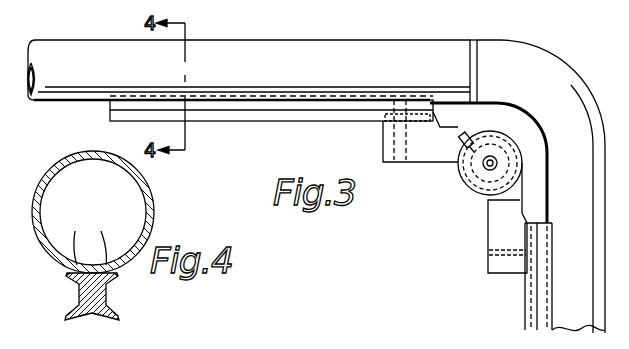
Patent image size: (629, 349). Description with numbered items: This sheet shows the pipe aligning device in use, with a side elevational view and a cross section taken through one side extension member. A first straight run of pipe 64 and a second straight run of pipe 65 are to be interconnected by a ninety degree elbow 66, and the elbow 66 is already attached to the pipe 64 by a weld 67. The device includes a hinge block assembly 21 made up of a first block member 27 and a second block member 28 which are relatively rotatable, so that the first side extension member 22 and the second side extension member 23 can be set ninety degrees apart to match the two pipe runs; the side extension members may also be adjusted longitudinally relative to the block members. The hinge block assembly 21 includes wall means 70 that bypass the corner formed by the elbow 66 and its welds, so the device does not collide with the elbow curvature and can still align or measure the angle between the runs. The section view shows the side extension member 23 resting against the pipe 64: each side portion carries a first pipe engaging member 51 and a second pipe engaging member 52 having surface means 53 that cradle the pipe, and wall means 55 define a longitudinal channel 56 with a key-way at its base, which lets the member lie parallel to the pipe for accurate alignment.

In FIG. 3, the hinge block assembly 21 is at (469, 189).
In FIG. 3, the first side extension member 22 is at (524, 301).
In FIG. 3, the second side extension member 23 is at (348, 122).
In FIG. 4, the second side extension member 23 is at (106, 281).
In FIG. 3, the first block member 27 is at (498, 233).
In FIG. 3, the second block member 28 is at (417, 157).
In FIG. 4, the first pipe engaging member 51 is at (112, 276).
In FIG. 4, the second pipe engaging member 52 is at (70, 276).
In FIG. 4, the surface means 53 is at (97, 239).
In FIG. 4, the wall means 55 is at (90, 318).
In FIG. 4, the channel 56 is at (86, 320).
In FIG. 3, the first straight run of pipe 64 is at (362, 40).
In FIG. 4, the first straight run of pipe 64 is at (155, 210).
In FIG. 3, the second straight run of pipe 65 is at (592, 228).
In FIG. 3, the 90 degree elbow 66 is at (556, 70).
In FIG. 3, the weld 67 is at (475, 40).
In FIG. 3, the wall means 70 is at (510, 134).